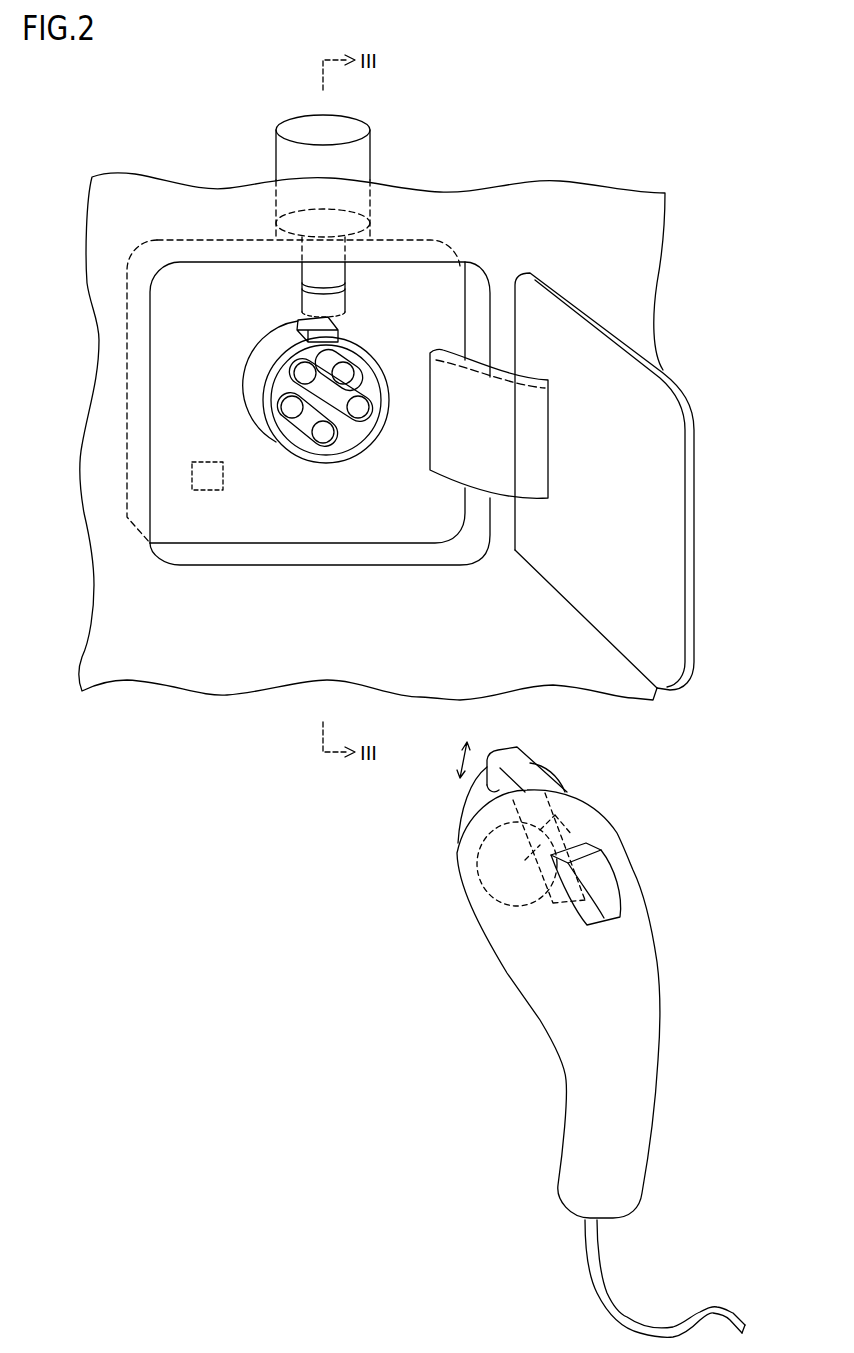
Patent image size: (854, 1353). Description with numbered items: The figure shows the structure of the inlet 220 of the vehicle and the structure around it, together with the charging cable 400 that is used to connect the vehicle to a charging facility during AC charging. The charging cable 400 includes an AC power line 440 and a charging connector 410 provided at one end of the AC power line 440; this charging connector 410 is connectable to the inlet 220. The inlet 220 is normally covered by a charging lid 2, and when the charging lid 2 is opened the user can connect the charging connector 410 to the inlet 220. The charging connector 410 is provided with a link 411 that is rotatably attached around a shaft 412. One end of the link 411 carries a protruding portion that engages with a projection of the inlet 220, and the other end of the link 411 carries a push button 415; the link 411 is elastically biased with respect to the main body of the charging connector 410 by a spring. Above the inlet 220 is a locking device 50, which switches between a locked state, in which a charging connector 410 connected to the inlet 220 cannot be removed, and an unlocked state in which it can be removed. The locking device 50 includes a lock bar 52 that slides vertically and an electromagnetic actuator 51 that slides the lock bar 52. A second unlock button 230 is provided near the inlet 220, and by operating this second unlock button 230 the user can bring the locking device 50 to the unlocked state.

The charging lid 2 is at (693, 555).
The locking device 50 is at (383, 194).
The electromagnetic actuator 51 is at (360, 160).
The lock bar 52 is at (345, 300).
The inlet 220 is at (273, 357).
The second unlock button 230 is at (207, 490).
The charging cable 400 is at (569, 1039).
The charging connector 410 is at (657, 977).
The link 411 is at (490, 788).
The shaft 412 is at (567, 797).
The push button 415 is at (593, 853).
The AC power line 440 is at (597, 1272).